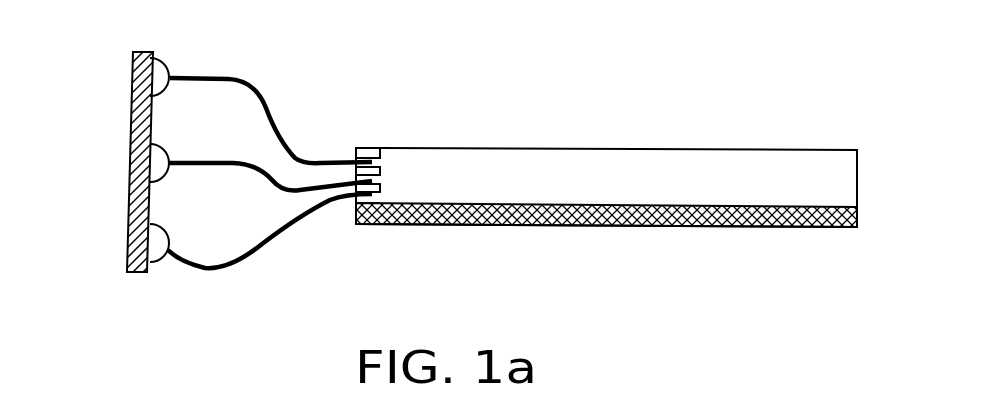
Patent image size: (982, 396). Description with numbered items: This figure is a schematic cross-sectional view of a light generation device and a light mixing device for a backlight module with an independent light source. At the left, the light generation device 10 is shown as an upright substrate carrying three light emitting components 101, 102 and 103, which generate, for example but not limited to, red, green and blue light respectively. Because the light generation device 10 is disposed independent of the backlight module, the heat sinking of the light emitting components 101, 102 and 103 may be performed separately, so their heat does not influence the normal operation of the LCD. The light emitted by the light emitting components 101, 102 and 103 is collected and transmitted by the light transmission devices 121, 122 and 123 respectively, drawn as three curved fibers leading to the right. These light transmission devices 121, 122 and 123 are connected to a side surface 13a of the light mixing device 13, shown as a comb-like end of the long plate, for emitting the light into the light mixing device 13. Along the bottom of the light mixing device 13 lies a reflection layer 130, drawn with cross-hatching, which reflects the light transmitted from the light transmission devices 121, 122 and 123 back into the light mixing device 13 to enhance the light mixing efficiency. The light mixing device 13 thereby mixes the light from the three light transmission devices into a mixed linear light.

The light generation device 10 is at (130, 182).
The light emitting component 101 is at (163, 68).
The light emitting component 102 is at (157, 157).
The light emitting component 103 is at (127, 258).
The light transmission device 121 is at (260, 93).
The light transmission device 122 is at (285, 195).
The light transmission device 123 is at (221, 268).
The light mixing device 13 is at (770, 162).
The side surface 13a is at (380, 158).
The reflection layer 130 is at (690, 226).